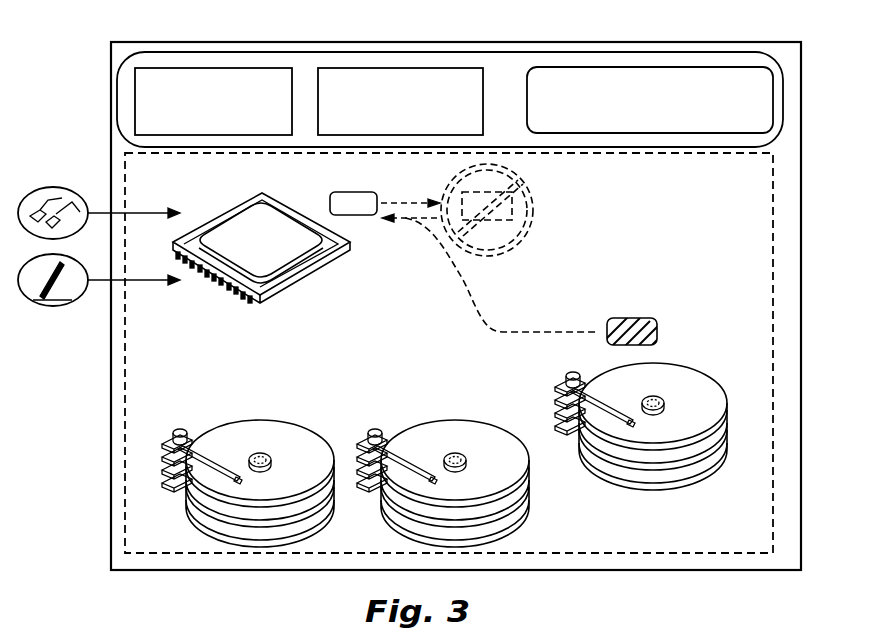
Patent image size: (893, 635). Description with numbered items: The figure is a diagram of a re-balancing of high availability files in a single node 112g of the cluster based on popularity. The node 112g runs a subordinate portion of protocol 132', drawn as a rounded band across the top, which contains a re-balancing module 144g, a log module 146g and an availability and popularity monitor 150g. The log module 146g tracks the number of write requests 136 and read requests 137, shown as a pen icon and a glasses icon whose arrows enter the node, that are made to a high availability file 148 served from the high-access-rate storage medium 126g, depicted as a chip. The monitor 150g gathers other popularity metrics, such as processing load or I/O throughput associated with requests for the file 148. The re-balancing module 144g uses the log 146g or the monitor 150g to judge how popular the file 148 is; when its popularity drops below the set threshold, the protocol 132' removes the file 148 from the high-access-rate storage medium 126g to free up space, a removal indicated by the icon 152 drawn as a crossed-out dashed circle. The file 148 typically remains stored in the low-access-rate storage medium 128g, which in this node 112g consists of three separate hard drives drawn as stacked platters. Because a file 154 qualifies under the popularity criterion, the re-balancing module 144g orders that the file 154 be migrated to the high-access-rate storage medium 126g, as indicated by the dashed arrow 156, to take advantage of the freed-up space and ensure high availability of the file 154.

The subordinate portion of protocol 132' is at (411, 99).
The re-balancing module 144g is at (215, 68).
The log module 146g is at (355, 68).
The availability and popularity monitor 150g is at (655, 67).
The node 112g is at (111, 498).
The read requests 137 is at (53, 187).
The write requests 136 is at (53, 306).
The high-access-rate storage medium 126g is at (312, 283).
The high availability file 148 is at (372, 217).
The icon 152 is at (533, 210).
The file 154 is at (620, 318).
The dashed arrow 156 is at (478, 298).
The low-access-rate storage medium 128g is at (650, 514).